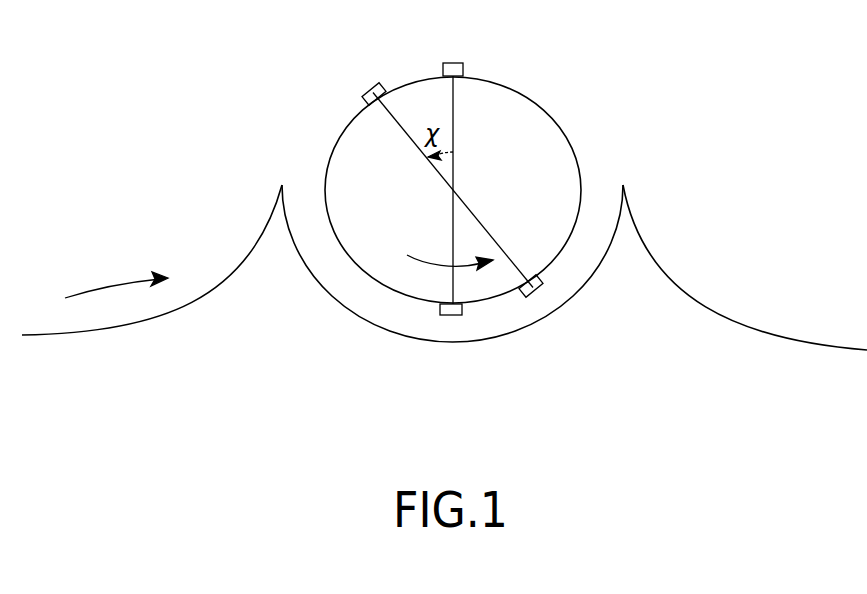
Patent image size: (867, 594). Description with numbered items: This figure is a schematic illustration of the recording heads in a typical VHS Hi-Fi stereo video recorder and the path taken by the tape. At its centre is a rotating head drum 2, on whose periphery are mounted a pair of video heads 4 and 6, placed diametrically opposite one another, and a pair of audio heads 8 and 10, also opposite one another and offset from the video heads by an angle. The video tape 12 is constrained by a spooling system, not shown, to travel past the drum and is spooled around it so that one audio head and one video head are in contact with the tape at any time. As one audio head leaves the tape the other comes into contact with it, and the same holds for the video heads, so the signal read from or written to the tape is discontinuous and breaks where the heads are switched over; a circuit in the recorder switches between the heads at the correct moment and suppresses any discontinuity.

The rotating head drum 2 is at (542, 105).
The video head 4 is at (455, 62).
The video head 6 is at (452, 317).
The audio head 8 is at (376, 87).
The audio head 10 is at (534, 298).
The video tape 12 is at (247, 262).